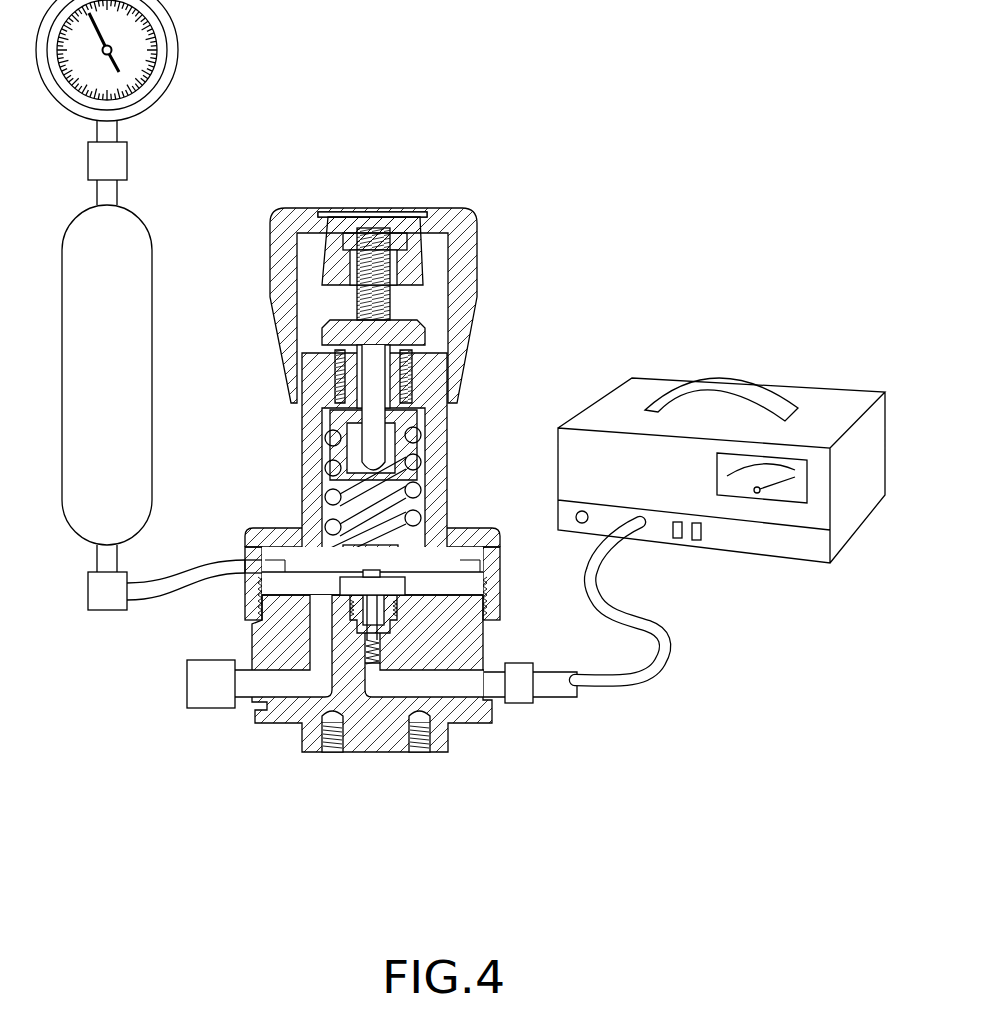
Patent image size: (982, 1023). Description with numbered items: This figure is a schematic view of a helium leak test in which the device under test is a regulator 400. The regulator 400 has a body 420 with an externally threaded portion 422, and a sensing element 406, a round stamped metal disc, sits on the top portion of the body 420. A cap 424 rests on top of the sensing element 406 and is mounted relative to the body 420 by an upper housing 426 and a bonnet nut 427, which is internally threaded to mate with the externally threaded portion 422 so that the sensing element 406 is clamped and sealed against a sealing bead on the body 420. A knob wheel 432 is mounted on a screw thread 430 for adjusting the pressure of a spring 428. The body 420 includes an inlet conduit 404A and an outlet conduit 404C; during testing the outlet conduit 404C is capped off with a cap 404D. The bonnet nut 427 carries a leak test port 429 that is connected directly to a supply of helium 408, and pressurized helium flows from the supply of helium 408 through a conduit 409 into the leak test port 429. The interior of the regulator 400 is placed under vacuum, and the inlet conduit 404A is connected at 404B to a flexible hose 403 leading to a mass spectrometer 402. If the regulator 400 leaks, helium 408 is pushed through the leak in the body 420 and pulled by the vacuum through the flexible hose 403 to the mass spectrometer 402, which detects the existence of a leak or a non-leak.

The regulator 400 is at (407, 506).
The mass spectrometer 402 is at (832, 407).
The flexible hose 403 is at (671, 654).
The inlet conduit 404A is at (463, 690).
The connection 404B is at (522, 703).
The outlet conduit 404C is at (280, 690).
The cap 404D is at (217, 700).
The sensing element 406 is at (397, 573).
The supply of helium 408 is at (150, 288).
The conduit 409 is at (180, 574).
The body 420 is at (487, 643).
The externally threaded portion 422 is at (490, 597).
The cap 424 is at (370, 560).
The upper housing 426 is at (437, 423).
The bonnet nut 427 is at (500, 548).
The spring 428 is at (410, 487).
The leak test port 429 is at (254, 560).
The screw thread 430 is at (373, 297).
The knob wheel 432 is at (462, 243).